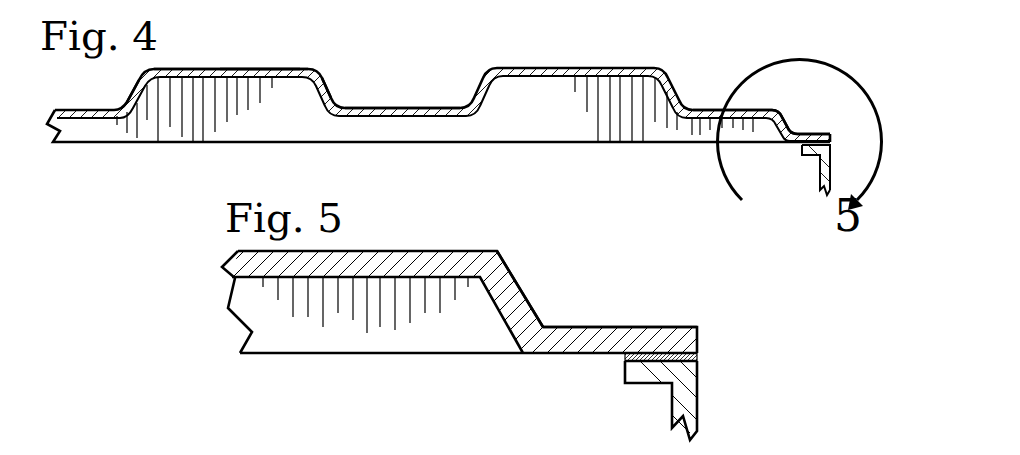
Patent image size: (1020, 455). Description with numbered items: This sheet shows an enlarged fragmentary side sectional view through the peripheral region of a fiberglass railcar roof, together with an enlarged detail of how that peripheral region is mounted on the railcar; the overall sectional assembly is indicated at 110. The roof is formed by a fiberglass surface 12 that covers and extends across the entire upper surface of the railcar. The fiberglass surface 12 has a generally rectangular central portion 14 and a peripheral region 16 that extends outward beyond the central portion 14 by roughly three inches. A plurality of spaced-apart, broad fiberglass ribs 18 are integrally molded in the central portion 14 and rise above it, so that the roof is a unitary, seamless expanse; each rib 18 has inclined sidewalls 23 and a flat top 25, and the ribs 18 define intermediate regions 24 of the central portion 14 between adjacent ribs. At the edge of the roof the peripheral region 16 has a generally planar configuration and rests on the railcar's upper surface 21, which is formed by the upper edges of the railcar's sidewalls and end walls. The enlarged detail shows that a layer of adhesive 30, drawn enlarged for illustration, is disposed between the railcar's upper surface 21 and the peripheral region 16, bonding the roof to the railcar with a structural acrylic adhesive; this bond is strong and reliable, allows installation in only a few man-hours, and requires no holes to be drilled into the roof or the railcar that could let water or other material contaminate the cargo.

In FIG. 4, the panel assembly 110 is at (583, 42).
In FIG. 4, the central portion 14 is at (698, 110).
In FIG. 5, the central portion 14 is at (413, 251).
In FIG. 4, the fiberglass surface 12 is at (797, 128).
In FIG. 5, the fiberglass surface 12 is at (556, 314).
In FIG. 4, the peripheral region 16 is at (823, 134).
In FIG. 5, the peripheral region 16 is at (641, 327).
In FIG. 4, the upper surface 21 is at (830, 183).
In FIG. 5, the upper surface 21 is at (699, 405).
In FIG. 5, the layer of adhesive 30 is at (700, 357).
In FIG. 4, the fiberglass ribs 18 is at (258, 70).
In FIG. 4, the inclined sidewalls 23 is at (128, 103).
In FIG. 4, the intermediate regions 24 is at (398, 108).
In FIG. 4, the flat tops 25 is at (182, 69).